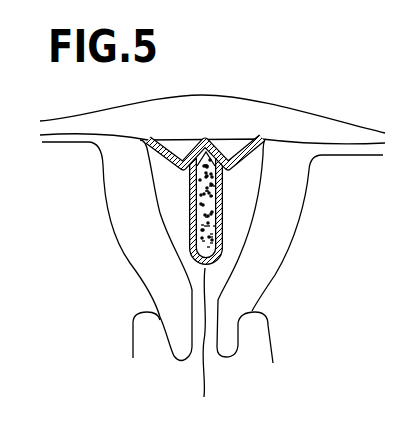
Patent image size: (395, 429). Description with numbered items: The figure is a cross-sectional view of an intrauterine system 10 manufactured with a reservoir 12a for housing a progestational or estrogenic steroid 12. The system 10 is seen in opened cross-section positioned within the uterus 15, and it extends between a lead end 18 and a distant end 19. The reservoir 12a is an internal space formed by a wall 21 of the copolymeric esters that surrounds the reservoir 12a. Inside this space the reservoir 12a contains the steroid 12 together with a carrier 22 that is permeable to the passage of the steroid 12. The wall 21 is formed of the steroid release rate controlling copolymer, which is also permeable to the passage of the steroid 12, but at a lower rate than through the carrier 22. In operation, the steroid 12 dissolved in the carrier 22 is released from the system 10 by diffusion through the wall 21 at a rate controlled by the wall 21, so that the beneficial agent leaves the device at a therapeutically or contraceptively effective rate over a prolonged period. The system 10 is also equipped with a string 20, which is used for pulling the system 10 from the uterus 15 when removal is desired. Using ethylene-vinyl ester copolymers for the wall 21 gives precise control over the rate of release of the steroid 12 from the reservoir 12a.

The intrauterine system 10 is at (240, 197).
The steroid 12 is at (214, 210).
The reservoir 12a is at (217, 180).
The uterus 15 is at (175, 215).
The lead end 18 is at (205, 140).
The distant end 19 is at (220, 275).
The string 20 is at (205, 388).
The wall 21 is at (182, 182).
The carrier 22 is at (187, 236).